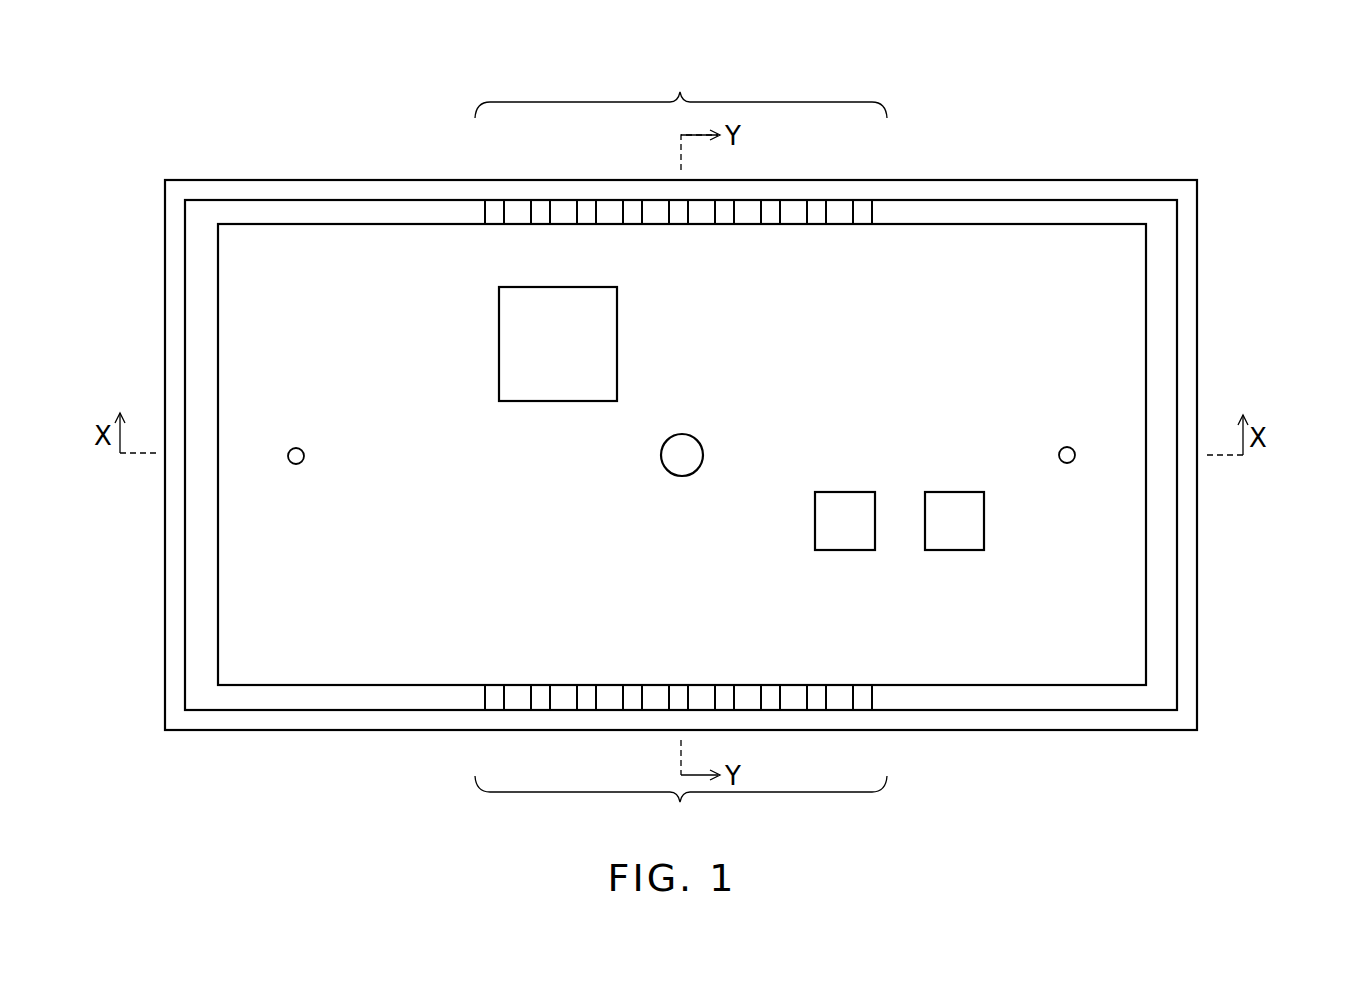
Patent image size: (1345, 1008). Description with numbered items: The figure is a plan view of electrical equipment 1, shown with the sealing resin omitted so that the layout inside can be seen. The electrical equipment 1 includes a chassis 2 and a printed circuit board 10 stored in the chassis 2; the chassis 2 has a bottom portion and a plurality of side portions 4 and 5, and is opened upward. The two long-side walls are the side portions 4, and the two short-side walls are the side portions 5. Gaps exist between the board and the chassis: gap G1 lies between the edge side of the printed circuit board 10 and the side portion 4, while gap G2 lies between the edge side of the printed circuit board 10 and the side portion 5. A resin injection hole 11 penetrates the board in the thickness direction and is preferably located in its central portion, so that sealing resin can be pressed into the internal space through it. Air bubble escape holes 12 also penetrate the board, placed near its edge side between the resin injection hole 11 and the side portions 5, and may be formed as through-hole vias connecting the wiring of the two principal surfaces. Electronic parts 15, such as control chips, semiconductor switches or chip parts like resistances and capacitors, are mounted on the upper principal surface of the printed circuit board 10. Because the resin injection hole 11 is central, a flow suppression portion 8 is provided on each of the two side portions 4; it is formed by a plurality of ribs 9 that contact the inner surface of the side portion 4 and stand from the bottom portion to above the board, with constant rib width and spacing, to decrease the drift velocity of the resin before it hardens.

The electrical equipment 1 is at (1247, 119).
The chassis 2 is at (1024, 180).
The side portion 4 is at (318, 188).
The side portion 5 is at (177, 560).
The gap G1 is at (432, 210).
The gap G2 is at (198, 322).
The flow suppression portion 8 is at (681, 448).
The rib 9 is at (494, 212).
The printed circuit board 10 is at (1148, 600).
The resin injection hole 11 is at (684, 448).
The air bubble escape hole 12 is at (296, 465).
The electronic part 15 is at (520, 343).